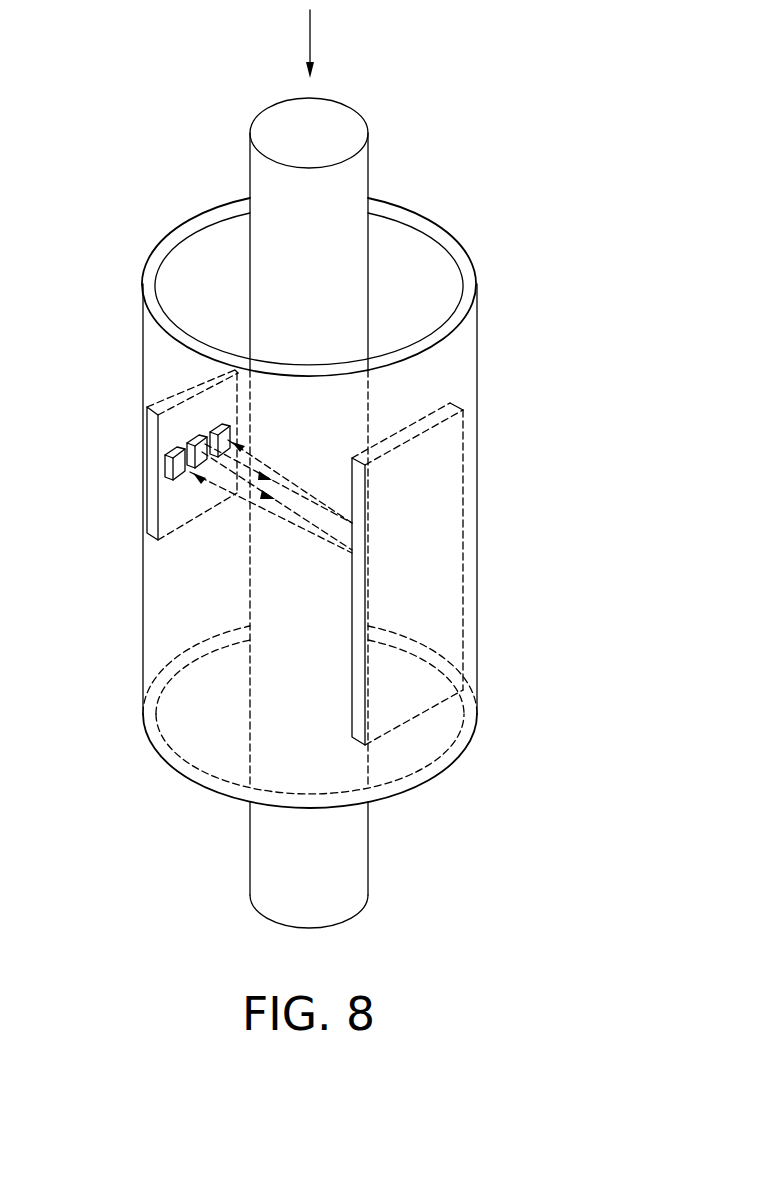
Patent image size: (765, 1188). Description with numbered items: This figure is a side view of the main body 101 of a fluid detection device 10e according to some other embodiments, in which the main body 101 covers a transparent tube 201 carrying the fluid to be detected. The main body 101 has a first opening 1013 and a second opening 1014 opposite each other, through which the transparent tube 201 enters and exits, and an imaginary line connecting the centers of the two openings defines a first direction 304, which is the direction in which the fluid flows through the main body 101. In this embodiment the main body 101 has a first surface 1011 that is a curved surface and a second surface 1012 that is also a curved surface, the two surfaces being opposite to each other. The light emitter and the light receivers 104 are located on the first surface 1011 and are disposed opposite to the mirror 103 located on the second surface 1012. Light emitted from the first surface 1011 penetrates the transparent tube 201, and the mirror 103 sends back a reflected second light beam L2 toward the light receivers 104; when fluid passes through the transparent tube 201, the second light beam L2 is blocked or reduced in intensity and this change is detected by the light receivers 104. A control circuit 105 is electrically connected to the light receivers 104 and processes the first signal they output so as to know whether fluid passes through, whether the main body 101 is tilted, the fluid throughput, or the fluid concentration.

The fluid detection device 10e is at (108, 92).
The first direction 304 is at (312, 32).
The transparent tube 201 is at (268, 170).
The first opening 1013 is at (406, 240).
The main body 101 is at (462, 357).
The first surface 1011 is at (134, 418).
The light receiver 104 is at (148, 468).
The second light beam L2 is at (207, 488).
The control circuit 105 is at (142, 523).
The mirror 103 is at (422, 523).
The second surface 1012 is at (434, 581).
The second opening 1014 is at (431, 758).